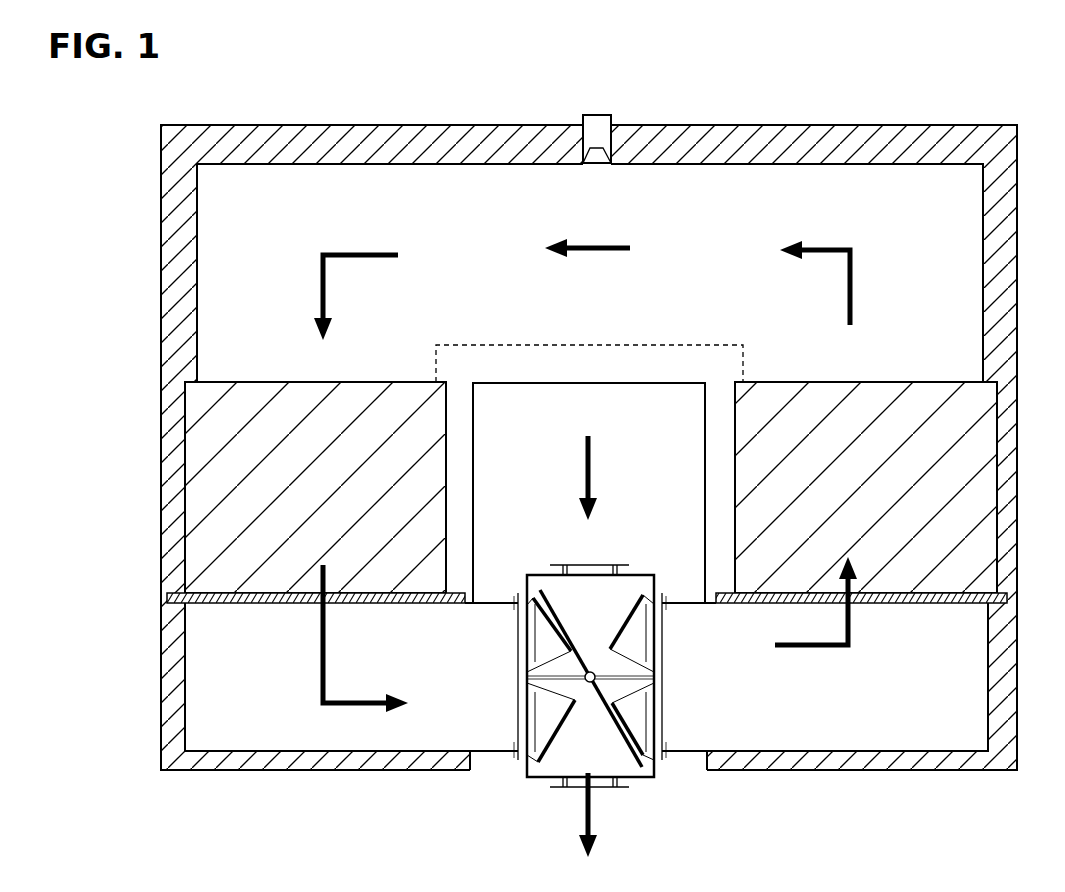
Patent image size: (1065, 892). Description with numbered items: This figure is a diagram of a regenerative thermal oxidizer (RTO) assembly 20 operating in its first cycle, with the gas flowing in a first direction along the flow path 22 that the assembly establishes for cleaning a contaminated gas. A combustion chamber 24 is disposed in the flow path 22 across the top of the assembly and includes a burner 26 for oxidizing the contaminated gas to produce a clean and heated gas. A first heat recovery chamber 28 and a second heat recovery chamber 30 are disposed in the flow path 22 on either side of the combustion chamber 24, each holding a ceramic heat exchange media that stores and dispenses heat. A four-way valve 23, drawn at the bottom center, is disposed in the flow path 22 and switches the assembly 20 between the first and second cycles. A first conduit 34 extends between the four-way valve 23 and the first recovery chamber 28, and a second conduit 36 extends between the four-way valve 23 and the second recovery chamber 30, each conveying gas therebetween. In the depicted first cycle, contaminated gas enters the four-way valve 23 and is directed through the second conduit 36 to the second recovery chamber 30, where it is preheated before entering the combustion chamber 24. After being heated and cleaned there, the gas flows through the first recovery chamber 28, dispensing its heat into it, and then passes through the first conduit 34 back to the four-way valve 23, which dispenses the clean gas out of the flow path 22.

The regenerative thermal oxidizer (RTO) assembly 20 is at (818, 100).
The flow path 22 is at (350, 255).
The four-way valve 23 is at (647, 786).
The combustion chamber 24 is at (485, 165).
The burner 26 is at (614, 150).
The first heat recovery chamber 28 is at (197, 520).
The second heat recovery chamber 30 is at (984, 432).
The first conduit 34 is at (215, 752).
The second conduit 36 is at (947, 752).